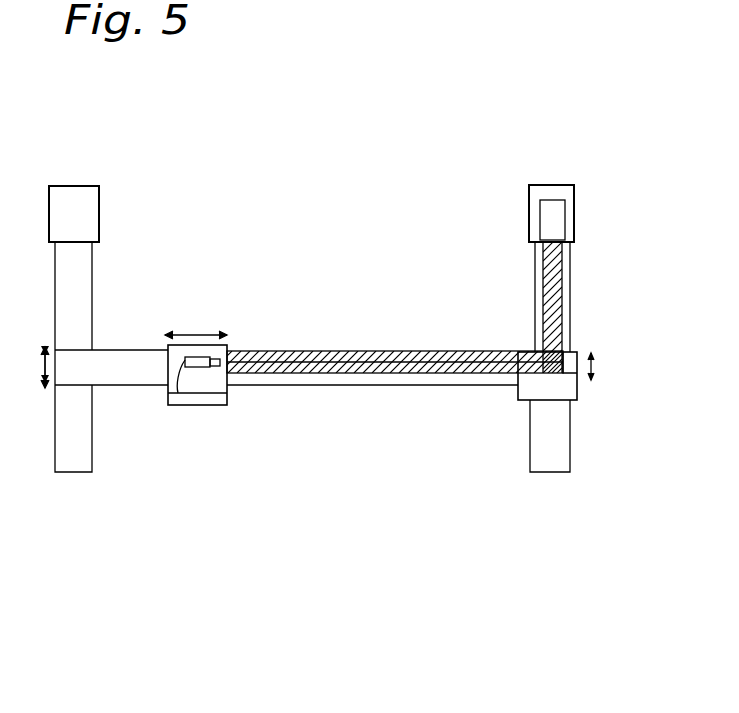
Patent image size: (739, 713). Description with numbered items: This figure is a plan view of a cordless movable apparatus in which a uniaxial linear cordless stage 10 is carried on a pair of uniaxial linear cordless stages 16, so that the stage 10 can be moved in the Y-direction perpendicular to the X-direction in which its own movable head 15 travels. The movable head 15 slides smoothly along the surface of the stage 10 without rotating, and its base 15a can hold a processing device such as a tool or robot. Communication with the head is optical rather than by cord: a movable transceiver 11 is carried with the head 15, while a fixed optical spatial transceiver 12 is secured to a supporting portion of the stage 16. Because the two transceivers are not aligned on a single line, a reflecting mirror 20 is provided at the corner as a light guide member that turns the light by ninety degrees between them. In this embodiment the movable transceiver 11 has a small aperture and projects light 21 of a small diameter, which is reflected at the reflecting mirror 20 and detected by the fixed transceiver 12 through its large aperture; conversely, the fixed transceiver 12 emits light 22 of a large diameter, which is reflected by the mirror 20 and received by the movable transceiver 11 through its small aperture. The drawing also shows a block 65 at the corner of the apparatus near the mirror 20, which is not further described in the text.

The uniaxial linear cordless stage 10 is at (118, 352).
The movable transceiver 11 is at (201, 368).
The fixed optical spatial transceiver 12 is at (548, 213).
The movable head 15 is at (176, 364).
The base 15a is at (217, 405).
The uniaxial linear cordless stage 16 is at (75, 193).
The reflecting mirror 20 is at (568, 365).
The light of small diameter 21 is at (252, 351).
The light of large diameter 22 is at (547, 327).
The support block 65 is at (535, 392).